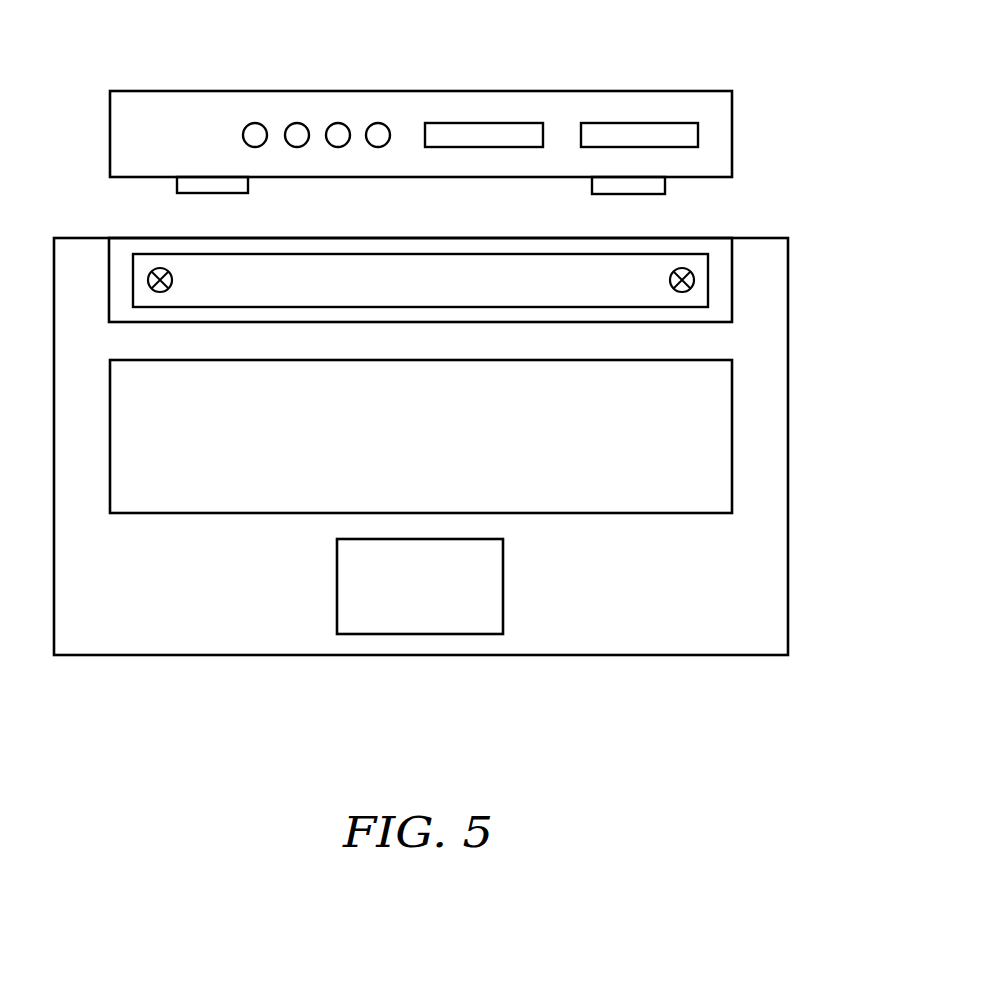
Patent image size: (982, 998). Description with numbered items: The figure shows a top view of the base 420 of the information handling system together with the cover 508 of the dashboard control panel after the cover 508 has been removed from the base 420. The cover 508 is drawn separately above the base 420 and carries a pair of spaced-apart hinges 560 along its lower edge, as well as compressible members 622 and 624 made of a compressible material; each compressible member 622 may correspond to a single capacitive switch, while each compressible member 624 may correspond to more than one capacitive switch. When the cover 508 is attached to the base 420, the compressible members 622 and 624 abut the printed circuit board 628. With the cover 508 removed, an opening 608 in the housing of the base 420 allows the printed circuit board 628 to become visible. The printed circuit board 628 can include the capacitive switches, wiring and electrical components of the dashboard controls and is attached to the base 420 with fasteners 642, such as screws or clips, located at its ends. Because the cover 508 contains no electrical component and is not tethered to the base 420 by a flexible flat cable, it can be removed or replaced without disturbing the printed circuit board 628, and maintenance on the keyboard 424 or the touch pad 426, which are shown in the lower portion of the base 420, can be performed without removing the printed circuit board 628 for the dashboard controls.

The cover 508 is at (732, 137).
The compressible member 622 is at (378, 122).
The compressible member 624 is at (625, 133).
The hinge 560 is at (248, 181).
The base 420 is at (788, 447).
The opening 608 is at (718, 280).
The printed circuit board 628 is at (443, 298).
The fastener 642 is at (172, 277).
The keyboard 424 is at (397, 453).
The touch pad 426 is at (397, 601).